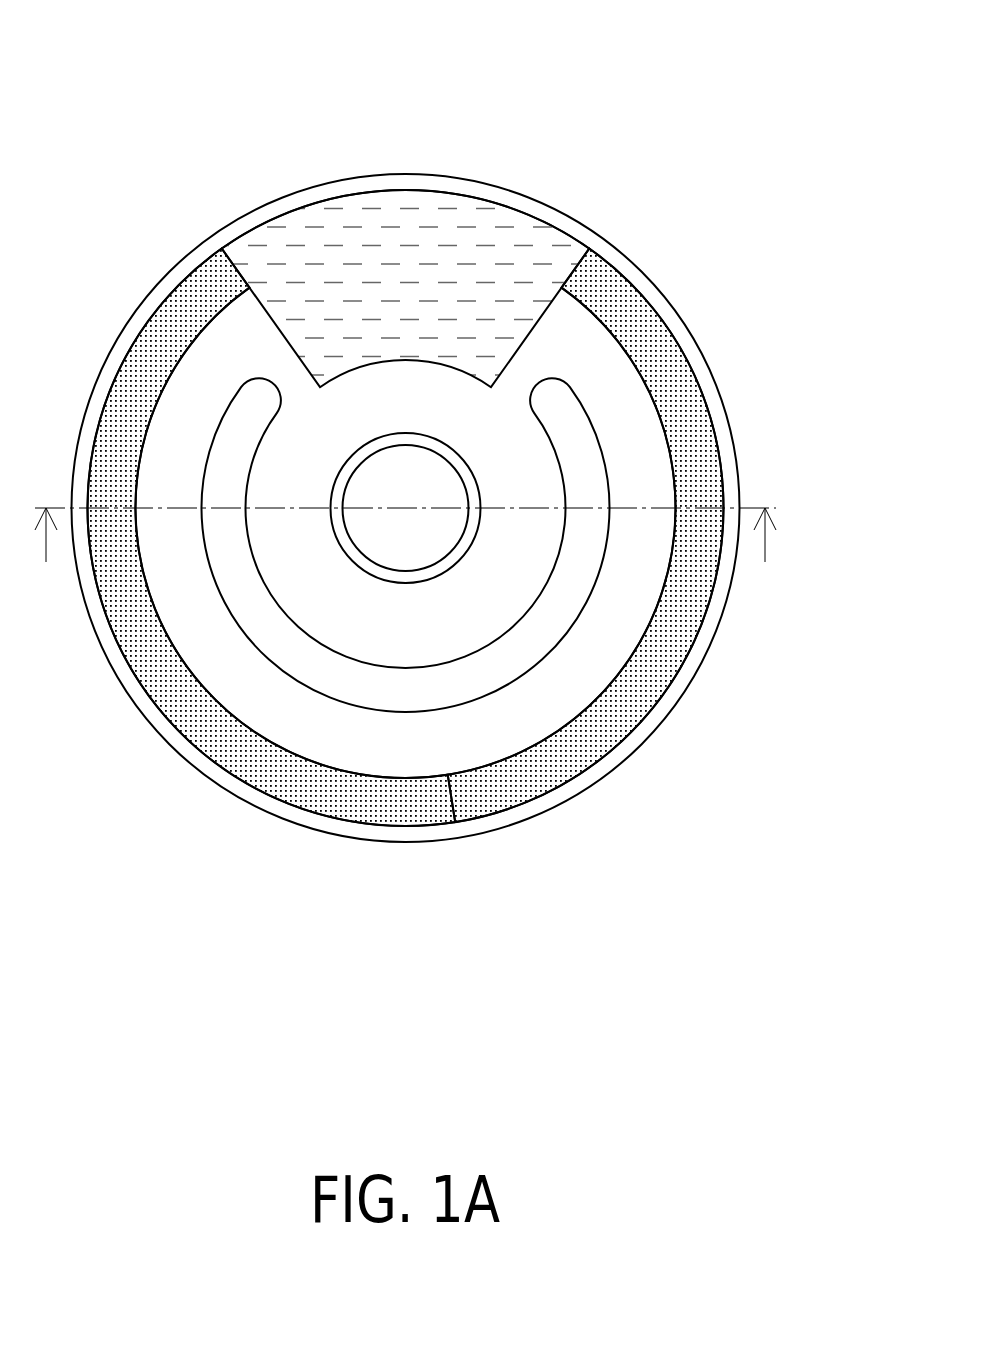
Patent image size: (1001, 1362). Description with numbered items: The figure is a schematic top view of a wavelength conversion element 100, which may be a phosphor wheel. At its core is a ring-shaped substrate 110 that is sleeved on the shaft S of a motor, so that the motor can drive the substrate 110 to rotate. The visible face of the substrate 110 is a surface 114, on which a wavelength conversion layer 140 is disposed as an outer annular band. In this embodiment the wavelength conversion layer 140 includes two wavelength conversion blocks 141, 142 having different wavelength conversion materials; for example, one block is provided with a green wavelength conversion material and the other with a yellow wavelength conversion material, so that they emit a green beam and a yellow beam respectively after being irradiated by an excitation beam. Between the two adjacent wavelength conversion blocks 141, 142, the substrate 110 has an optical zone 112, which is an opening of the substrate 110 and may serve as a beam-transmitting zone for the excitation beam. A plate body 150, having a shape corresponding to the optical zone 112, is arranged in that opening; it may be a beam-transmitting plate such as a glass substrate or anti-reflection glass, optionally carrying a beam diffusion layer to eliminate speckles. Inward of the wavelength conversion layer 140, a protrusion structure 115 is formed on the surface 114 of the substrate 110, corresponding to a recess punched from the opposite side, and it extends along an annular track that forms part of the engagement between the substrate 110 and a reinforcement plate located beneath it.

The wavelength conversion element 100 is at (83, 31).
The substrate 110 is at (593, 230).
The optical zone 112 is at (514, 188).
The surface 114 is at (618, 365).
The protrusion structure 115 is at (572, 445).
The wavelength conversion layer 140 is at (405, 648).
The wavelength conversion block 141 is at (277, 614).
The wavelength conversion block 142 is at (513, 782).
The plate body 150 is at (405, 227).
The shaft S is at (460, 565).